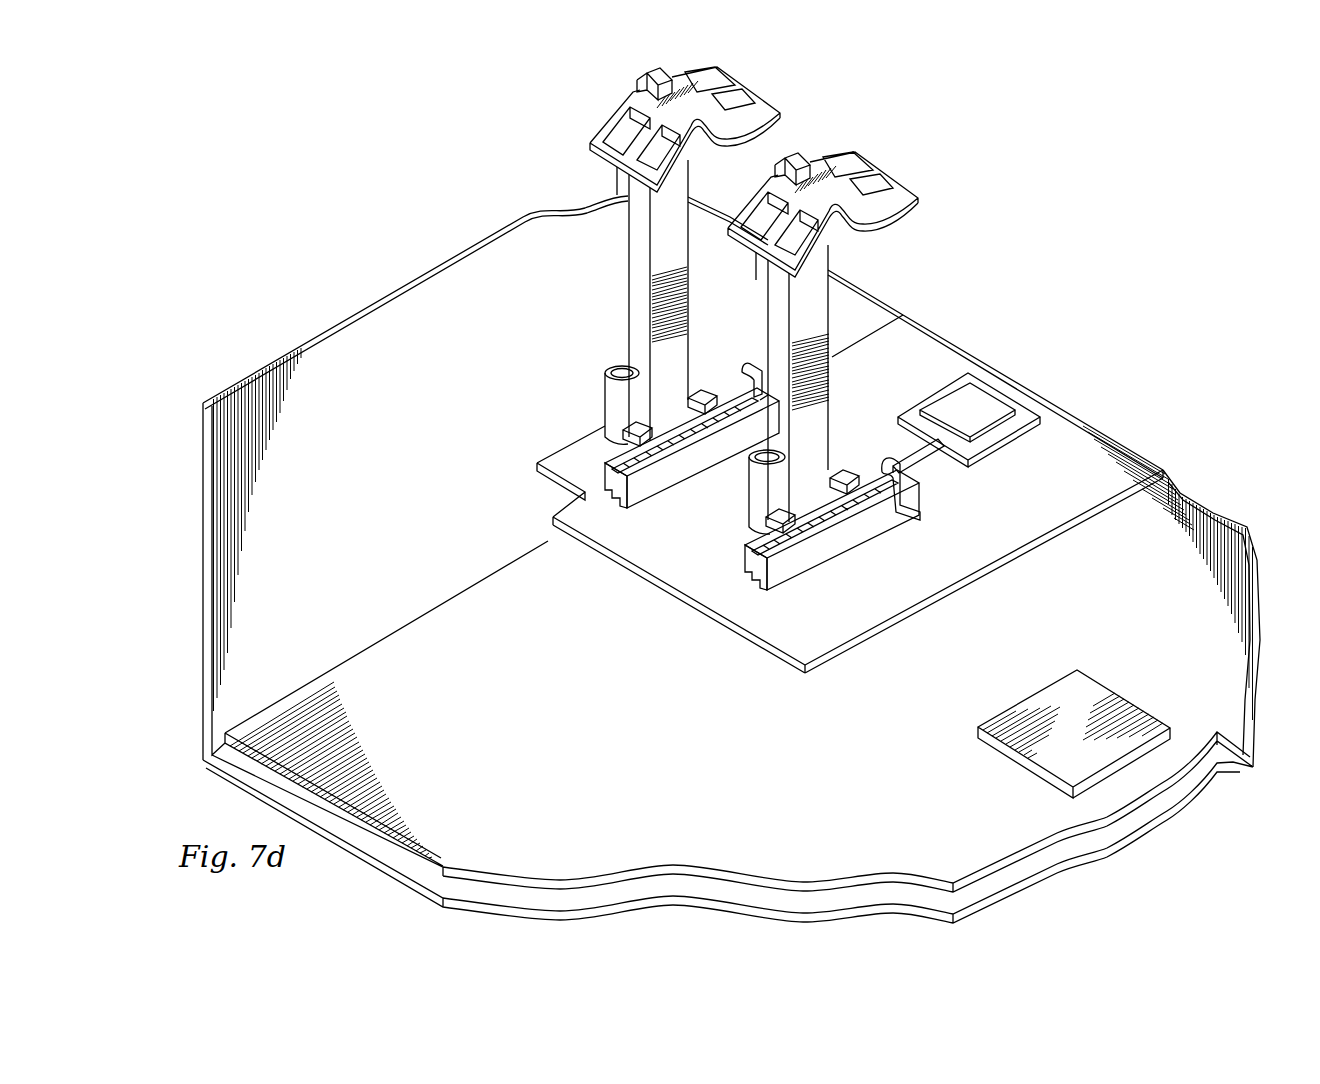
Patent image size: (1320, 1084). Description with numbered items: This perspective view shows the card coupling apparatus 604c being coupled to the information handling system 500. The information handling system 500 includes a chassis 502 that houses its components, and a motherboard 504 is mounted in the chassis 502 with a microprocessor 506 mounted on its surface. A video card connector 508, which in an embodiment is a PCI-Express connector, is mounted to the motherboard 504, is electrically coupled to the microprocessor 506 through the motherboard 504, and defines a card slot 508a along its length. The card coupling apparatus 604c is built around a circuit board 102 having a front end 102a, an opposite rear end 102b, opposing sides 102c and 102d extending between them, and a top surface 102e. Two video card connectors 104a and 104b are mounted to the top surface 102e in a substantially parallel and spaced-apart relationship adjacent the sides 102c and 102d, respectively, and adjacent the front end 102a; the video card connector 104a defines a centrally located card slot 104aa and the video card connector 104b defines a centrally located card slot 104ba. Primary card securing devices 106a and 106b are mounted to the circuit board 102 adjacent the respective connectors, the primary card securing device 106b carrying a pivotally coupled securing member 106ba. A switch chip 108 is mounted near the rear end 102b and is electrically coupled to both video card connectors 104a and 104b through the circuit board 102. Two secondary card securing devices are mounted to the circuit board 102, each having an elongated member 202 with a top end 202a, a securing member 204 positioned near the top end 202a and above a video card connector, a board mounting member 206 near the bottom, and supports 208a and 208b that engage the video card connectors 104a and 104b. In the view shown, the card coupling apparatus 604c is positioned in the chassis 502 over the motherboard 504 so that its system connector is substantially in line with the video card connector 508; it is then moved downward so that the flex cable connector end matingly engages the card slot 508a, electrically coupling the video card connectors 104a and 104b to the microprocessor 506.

The information handling system 500 is at (197, 517).
The chassis 502 is at (318, 375).
The motherboard 504 is at (400, 632).
The microprocessor 506 is at (1110, 715).
The video card connector 508 is at (640, 700).
The card slot 508a is at (707, 673).
The circuit board 102 is at (945, 333).
The front end 102a is at (655, 578).
The rear end 102b is at (1064, 397).
The side 102c is at (540, 462).
The side 102d is at (920, 617).
The top surface 102e is at (832, 648).
The video card connector 104a is at (612, 492).
The card slot 104aa is at (668, 480).
The video card connector 104b is at (753, 570).
The card slot 104ba is at (838, 527).
The primary card securing device 106a is at (745, 373).
The primary card securing device 106b is at (892, 458).
The securing member 106ba is at (940, 445).
The switch chip 108 is at (985, 403).
The elongated member 202 is at (636, 300).
The top end 202a is at (648, 78).
The securing member 204 is at (712, 125).
The board mounting member 206 is at (606, 390).
The support 208a is at (630, 426).
The support 208b is at (713, 425).
The card coupling apparatus 604c is at (573, 161).